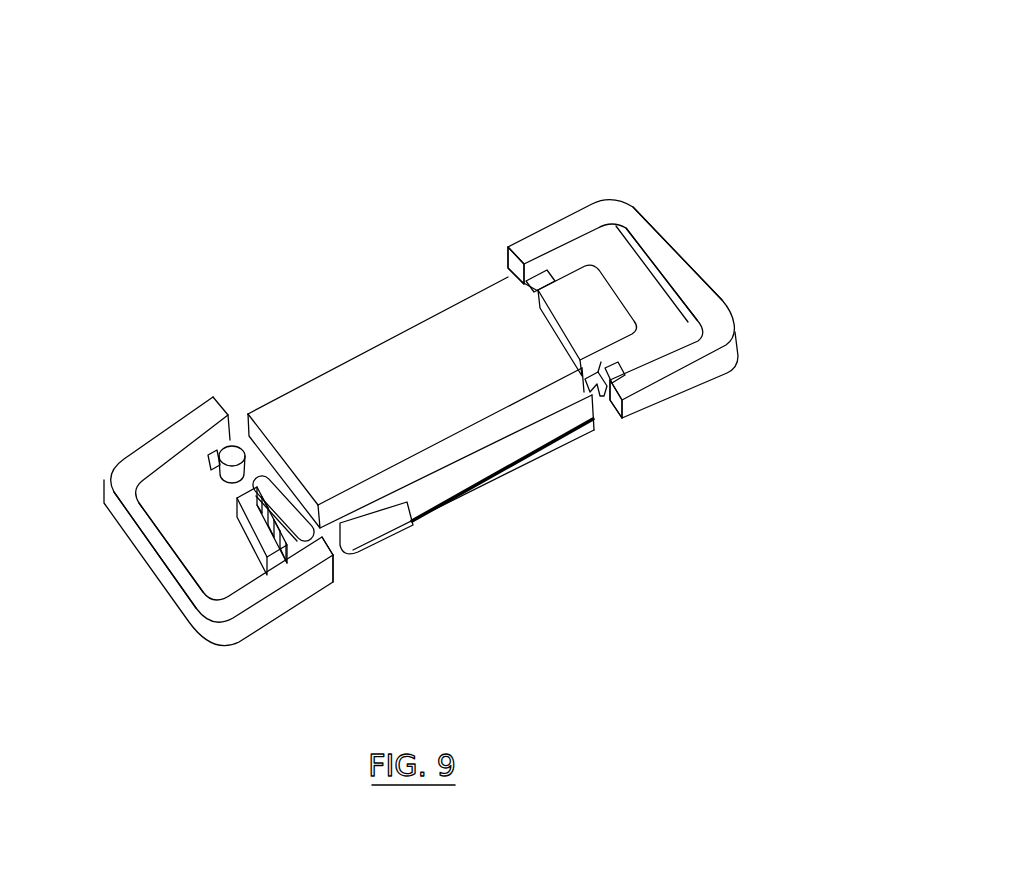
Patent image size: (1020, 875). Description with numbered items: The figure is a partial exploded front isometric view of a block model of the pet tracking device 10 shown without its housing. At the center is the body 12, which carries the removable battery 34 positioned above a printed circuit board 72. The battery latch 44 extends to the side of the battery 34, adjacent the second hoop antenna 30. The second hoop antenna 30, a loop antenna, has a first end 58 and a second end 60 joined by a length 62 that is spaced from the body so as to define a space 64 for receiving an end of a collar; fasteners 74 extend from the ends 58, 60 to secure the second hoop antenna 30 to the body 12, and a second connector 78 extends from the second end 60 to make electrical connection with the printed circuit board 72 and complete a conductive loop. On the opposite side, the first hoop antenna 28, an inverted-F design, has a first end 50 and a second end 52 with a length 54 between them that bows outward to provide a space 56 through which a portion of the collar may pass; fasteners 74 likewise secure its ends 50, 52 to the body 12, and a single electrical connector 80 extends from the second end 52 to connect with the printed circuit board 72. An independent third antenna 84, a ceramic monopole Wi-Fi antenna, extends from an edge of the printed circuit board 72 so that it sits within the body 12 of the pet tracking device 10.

The pet tracking device 10 is at (417, 342).
The body 12 is at (442, 377).
The first hoop antenna 28 is at (206, 523).
The second hoop antenna 30 is at (623, 314).
The removable battery 34 is at (415, 348).
The latch 44 is at (580, 282).
The first end 50 is at (230, 450).
The second end 52 is at (334, 568).
The length 54 is at (172, 555).
The space 56 is at (176, 516).
The first end 58 is at (508, 268).
The second end 60 is at (619, 415).
The length 62 is at (671, 257).
The space 64 is at (625, 272).
The printed circuit board 72 is at (481, 468).
The fasteners 74 is at (548, 276).
The second connector 78 is at (603, 398).
The electrical connector 80 is at (253, 507).
The third antenna 84 is at (393, 520).